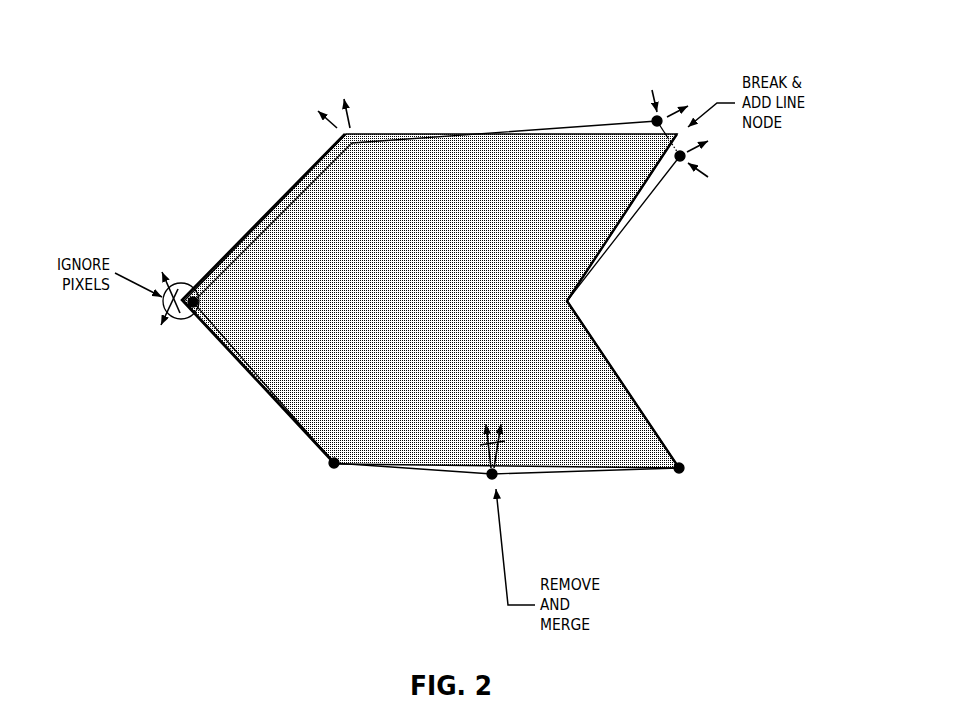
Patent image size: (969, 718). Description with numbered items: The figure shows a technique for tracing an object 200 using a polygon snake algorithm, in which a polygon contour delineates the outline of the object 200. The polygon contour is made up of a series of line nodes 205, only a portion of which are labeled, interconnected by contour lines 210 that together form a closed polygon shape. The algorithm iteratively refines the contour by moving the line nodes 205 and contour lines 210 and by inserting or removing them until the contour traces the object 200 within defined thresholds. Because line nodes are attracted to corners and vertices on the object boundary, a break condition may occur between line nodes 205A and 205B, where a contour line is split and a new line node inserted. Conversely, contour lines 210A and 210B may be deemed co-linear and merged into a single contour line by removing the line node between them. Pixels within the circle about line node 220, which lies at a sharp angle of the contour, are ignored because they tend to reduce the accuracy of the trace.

The object 200 is at (482, 308).
The line nodes 205 is at (718, 440).
The line node 205A is at (654, 119).
The line node 205B is at (685, 156).
The contour lines 210 is at (668, 243).
The contour line 210A is at (456, 472).
The contour line 210B is at (545, 475).
The line node 220 is at (193, 306).